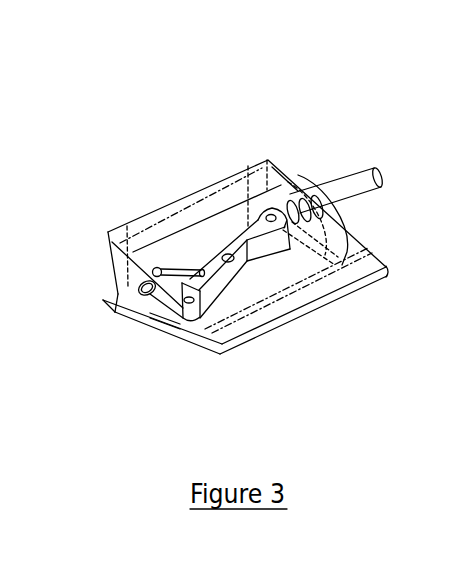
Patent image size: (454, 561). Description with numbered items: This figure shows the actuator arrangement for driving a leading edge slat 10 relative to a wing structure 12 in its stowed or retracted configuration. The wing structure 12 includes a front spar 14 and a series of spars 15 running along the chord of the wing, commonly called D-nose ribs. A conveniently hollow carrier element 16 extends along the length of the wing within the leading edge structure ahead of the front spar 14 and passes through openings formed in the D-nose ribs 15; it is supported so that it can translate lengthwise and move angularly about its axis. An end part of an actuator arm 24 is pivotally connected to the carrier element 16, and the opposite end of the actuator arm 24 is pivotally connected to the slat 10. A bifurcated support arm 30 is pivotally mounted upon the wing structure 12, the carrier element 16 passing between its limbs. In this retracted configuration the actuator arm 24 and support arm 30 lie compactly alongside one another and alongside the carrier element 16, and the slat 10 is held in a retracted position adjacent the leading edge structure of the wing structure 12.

The slat 10 is at (313, 293).
The wing structure 12 is at (127, 325).
The front spar 14 is at (113, 268).
The spars 15 is at (103, 300).
The carrier element 16 is at (362, 188).
The actuator arm 24 is at (257, 263).
The support arm 30 is at (182, 260).